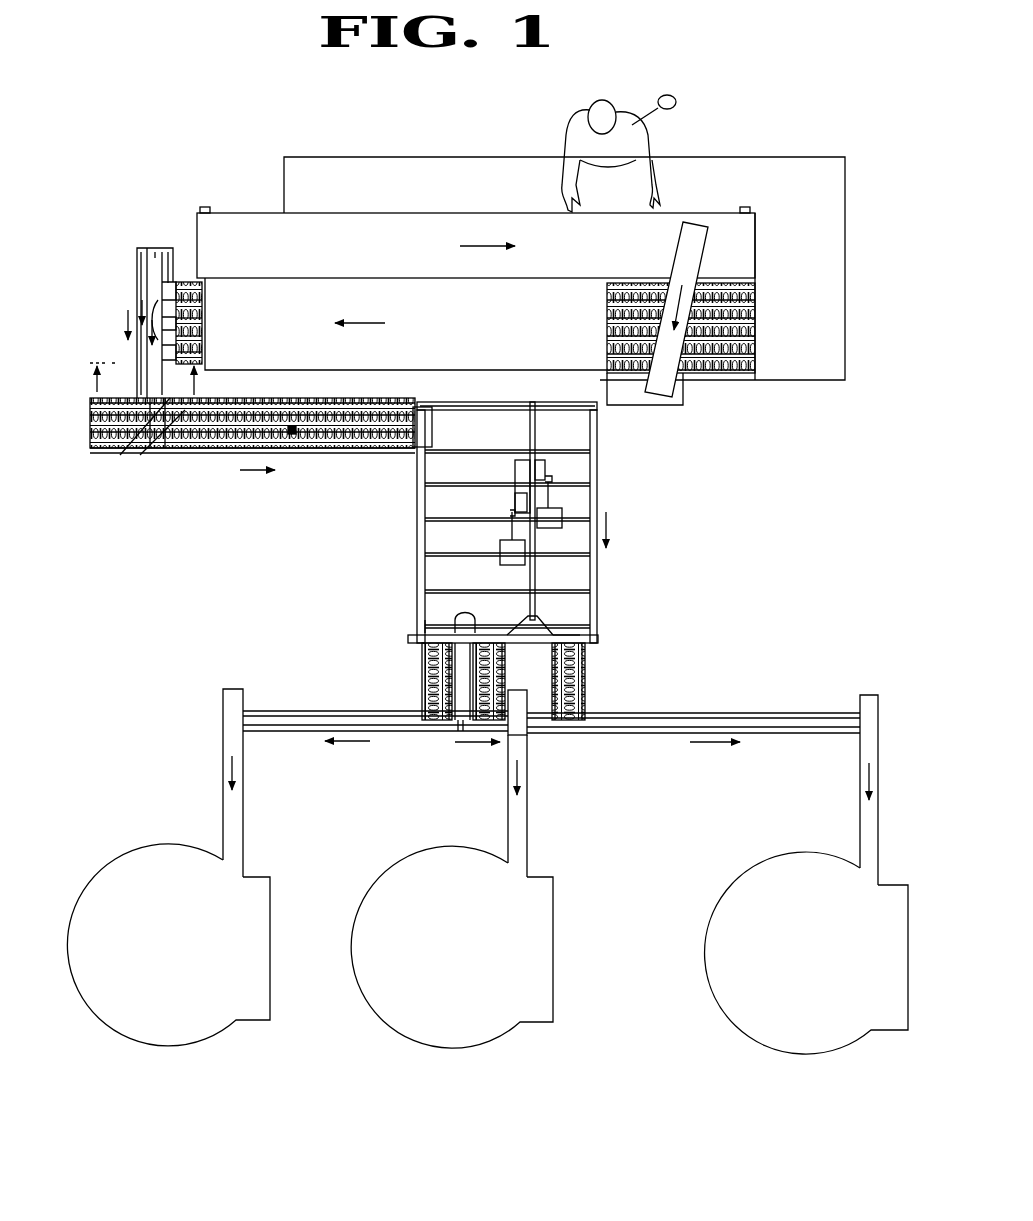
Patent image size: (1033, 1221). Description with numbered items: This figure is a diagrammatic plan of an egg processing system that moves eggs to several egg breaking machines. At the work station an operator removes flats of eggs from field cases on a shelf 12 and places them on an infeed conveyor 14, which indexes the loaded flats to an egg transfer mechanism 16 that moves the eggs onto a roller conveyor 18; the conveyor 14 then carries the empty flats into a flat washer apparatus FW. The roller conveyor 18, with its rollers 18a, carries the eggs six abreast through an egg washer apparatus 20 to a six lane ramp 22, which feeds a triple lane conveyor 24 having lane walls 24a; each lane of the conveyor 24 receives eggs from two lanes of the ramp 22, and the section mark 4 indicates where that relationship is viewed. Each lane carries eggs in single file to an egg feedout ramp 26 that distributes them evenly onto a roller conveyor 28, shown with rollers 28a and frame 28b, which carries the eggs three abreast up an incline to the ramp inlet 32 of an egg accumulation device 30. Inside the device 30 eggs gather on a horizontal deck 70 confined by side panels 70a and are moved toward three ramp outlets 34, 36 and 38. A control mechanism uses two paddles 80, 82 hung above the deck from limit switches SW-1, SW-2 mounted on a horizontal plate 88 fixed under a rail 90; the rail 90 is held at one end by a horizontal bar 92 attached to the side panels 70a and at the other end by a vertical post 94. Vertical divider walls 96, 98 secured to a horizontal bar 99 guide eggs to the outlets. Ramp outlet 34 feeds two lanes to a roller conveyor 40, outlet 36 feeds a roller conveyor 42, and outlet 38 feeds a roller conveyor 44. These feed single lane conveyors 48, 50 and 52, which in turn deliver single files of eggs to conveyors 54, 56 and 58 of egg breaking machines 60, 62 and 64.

The section line 4- 4 is at (143, 379).
The shelf 12 is at (438, 194).
The infeed conveyor 14 is at (398, 254).
The egg transfer mechanism 16 is at (656, 360).
The roller conveyor 18 is at (748, 320).
The screen elements 18a is at (740, 340).
The egg washer apparatus 20 is at (410, 331).
The six lane ramp 22 is at (172, 283).
The triple lane conveyor 24 is at (158, 244).
The tube walls 24a is at (138, 260).
The egg feedout ramp 26 is at (162, 422).
The roller conveyor 28 is at (213, 455).
The belt rollers 28a is at (287, 446).
The belt frame 28b is at (334, 402).
The egg accumulation device 30 is at (493, 553).
The ramp inlet 32 is at (432, 431).
The ramp outlet 34 is at (422, 650).
The ramp outlet 36 is at (490, 648).
The ramp outlet 38 is at (597, 641).
The roller conveyor 40 is at (418, 669).
The roller conveyor 42 is at (510, 681).
The roller conveyor 44 is at (592, 665).
The single lane conveyor 48 is at (302, 734).
The single lane conveyor 50 is at (466, 737).
The single lane conveyor 52 is at (680, 736).
The conveyor 54 is at (222, 756).
The conveyor 56 is at (530, 810).
The conveyor 58 is at (858, 810).
The egg breaking machine 60 is at (181, 941).
The egg breaking machine 62 is at (471, 941).
The egg breaking machine 64 is at (823, 951).
The horizontal deck 70 is at (432, 551).
The side panels 70a is at (417, 492).
The paddle 80 is at (507, 563).
The paddle 82 is at (558, 528).
The horizontal plate 88 is at (514, 472).
The rail 90 is at (536, 406).
The horizontal bar 92 is at (468, 403).
The vertical post 94 is at (536, 625).
The vertical divider wall 96 is at (460, 618).
The vertical divider wall 98 is at (553, 630).
The horizontal bar 99 is at (428, 632).
The limit switch SW-1 is at (514, 500).
The limit switch SW-2 is at (546, 470).
The flat washer apparatus FW is at (777, 269).